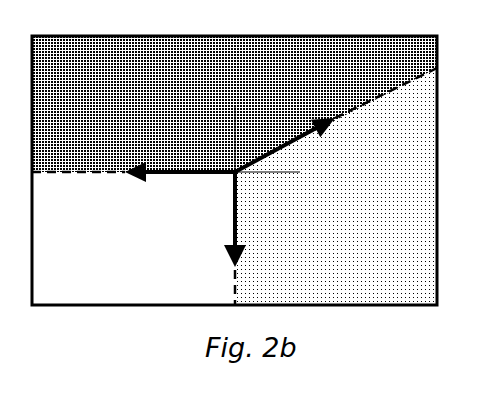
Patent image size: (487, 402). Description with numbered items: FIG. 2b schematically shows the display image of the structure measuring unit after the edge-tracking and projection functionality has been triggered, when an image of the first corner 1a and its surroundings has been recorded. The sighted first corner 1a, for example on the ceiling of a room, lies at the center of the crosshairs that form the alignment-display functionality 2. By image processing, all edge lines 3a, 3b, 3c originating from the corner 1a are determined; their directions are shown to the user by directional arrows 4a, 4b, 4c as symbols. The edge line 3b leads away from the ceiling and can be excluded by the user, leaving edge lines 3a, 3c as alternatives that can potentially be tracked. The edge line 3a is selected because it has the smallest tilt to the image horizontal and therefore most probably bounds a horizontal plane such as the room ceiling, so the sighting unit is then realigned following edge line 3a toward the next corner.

The first corner 1a is at (234, 170).
The alignment-display functionality 2 is at (281, 164).
The edge line 3a is at (78, 211).
The edge line 3b is at (193, 284).
The edge line 3c is at (386, 108).
The directional arrow 4a is at (180, 159).
The directional arrow 4b is at (275, 219).
The directional arrow 4c is at (285, 137).